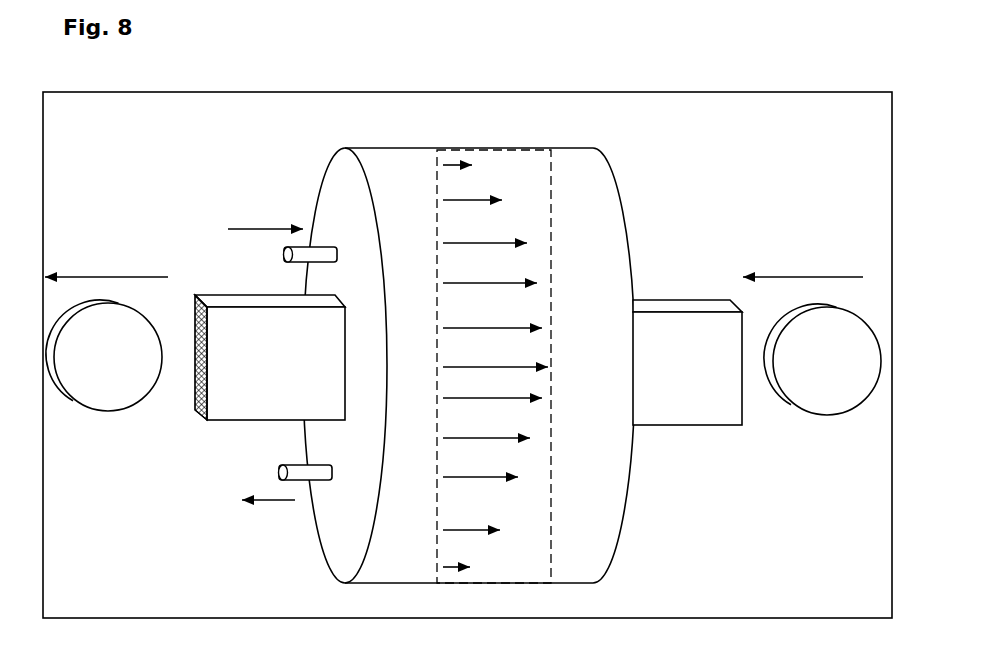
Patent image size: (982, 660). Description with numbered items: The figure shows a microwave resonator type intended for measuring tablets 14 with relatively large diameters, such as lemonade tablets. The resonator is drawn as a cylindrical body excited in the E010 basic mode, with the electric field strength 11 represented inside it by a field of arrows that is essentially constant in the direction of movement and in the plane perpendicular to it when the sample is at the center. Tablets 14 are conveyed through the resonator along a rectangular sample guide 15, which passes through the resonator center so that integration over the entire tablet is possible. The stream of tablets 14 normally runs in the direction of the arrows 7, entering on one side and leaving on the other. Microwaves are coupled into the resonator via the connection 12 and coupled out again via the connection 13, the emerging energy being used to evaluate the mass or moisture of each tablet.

The arrow 7 is at (110, 274).
The electric field strength 11 is at (538, 358).
The connection 12 is at (288, 250).
The connection 13 is at (297, 477).
The tablet 14 is at (463, 357).
The rectangular sample guide 15 is at (678, 400).